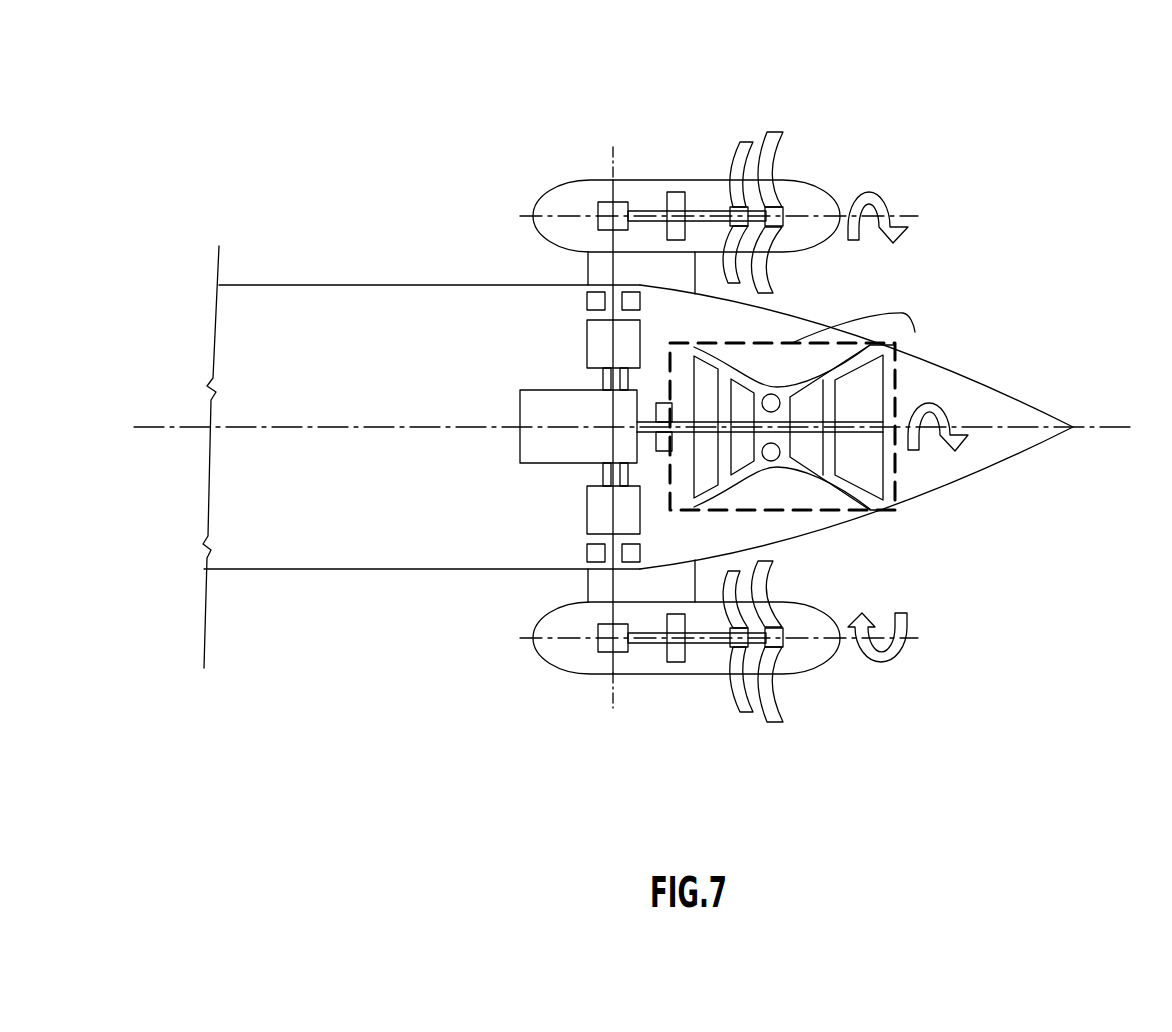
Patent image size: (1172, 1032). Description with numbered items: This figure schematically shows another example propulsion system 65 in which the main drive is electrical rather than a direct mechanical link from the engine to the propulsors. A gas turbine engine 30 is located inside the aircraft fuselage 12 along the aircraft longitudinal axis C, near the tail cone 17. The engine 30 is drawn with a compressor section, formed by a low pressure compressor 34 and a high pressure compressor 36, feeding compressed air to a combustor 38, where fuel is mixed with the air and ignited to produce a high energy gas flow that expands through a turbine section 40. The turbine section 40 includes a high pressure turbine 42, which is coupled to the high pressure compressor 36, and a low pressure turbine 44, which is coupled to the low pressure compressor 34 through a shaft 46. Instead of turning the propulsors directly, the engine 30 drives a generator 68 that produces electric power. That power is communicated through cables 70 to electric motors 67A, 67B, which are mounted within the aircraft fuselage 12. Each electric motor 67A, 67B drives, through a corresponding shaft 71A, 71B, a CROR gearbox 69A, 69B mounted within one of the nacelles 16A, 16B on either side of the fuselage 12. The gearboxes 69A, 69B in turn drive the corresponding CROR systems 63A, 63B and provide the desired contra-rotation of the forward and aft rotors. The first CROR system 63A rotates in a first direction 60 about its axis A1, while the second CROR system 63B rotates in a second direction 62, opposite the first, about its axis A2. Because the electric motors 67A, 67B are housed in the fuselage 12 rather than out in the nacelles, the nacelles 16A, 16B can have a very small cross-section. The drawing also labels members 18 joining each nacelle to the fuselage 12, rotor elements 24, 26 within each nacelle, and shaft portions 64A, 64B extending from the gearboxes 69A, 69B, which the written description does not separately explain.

The aircraft fuselage 12 is at (433, 275).
The tail cone 17 is at (1012, 378).
The strut 18 is at (575, 277).
The nacelle 16A is at (648, 168).
The nacelle 16B is at (596, 685).
The first propeller 24 is at (744, 142).
The second propeller 26 is at (782, 132).
The gas turbine engine 30 is at (788, 502).
The low pressure compressor 34 is at (700, 380).
The high pressure compressor 36 is at (738, 393).
The combustor 38 is at (767, 394).
The turbine section 40 is at (857, 322).
The high pressure turbine 42 is at (812, 408).
The low pressure turbine 44 is at (863, 396).
The shaft 46 is at (863, 430).
The first direction 60 is at (868, 190).
The second direction 62 is at (883, 668).
The CROR system 63A is at (842, 109).
The CROR system 63B is at (888, 767).
The first propulsor shaft 64A is at (710, 211).
The second propulsor shaft 64B is at (710, 674).
The propulsion system 65 is at (1040, 255).
The electric motor 67A is at (597, 340).
The electric motor 67B is at (597, 512).
The generator 68 is at (508, 410).
The CROR gearbox 69A is at (590, 205).
The CROR gearbox 69B is at (598, 652).
The cables 70 is at (582, 382).
The shaft 71A is at (598, 262).
The shaft 71B is at (598, 592).
The CROR axis A1 is at (910, 217).
The CROR axis A2 is at (912, 640).
The aircraft longitudinal axis C is at (1106, 427).